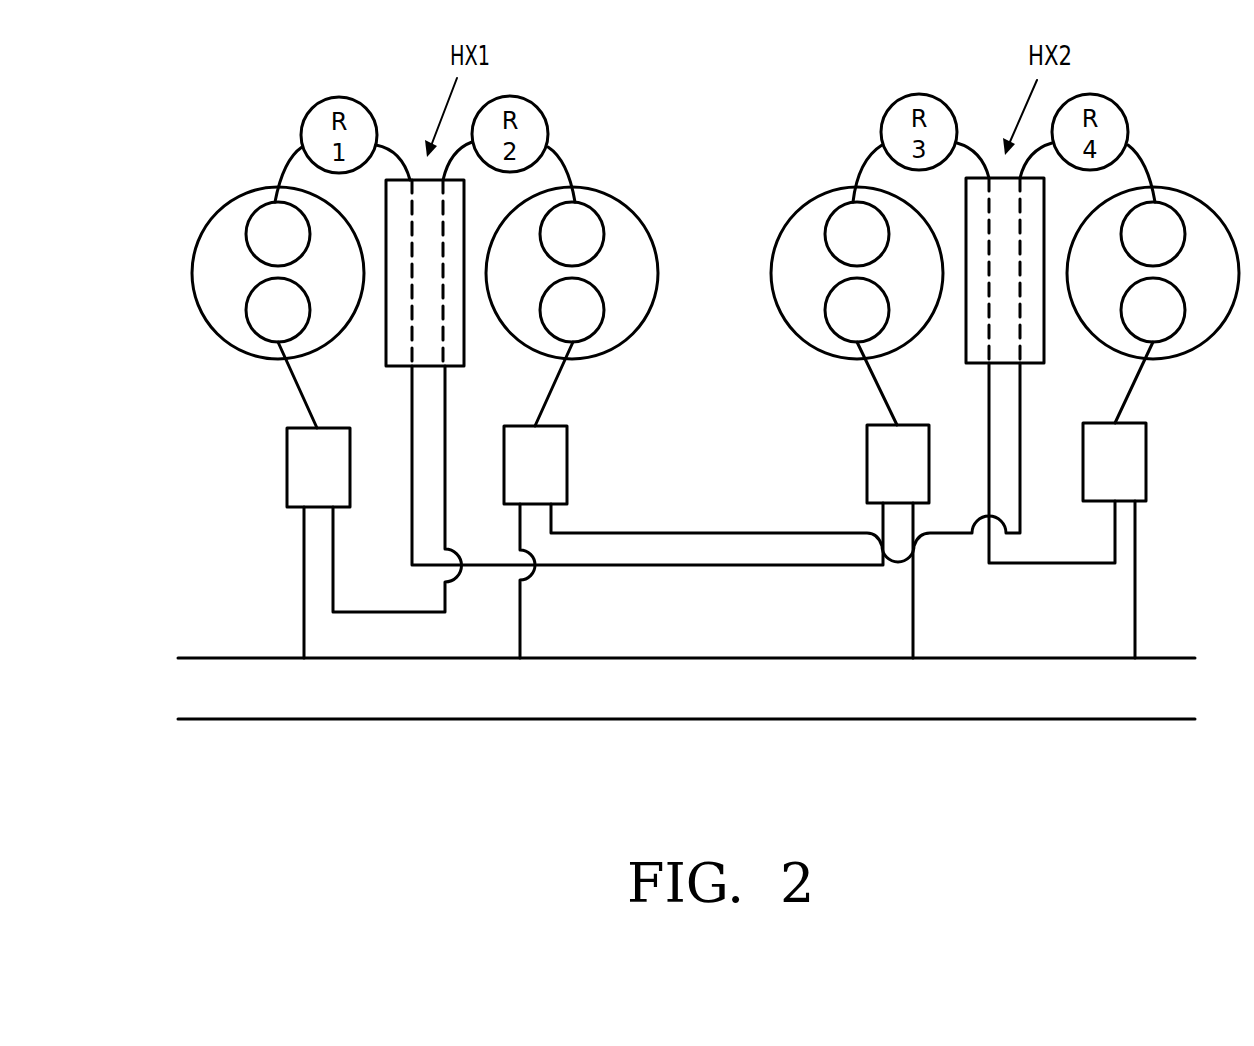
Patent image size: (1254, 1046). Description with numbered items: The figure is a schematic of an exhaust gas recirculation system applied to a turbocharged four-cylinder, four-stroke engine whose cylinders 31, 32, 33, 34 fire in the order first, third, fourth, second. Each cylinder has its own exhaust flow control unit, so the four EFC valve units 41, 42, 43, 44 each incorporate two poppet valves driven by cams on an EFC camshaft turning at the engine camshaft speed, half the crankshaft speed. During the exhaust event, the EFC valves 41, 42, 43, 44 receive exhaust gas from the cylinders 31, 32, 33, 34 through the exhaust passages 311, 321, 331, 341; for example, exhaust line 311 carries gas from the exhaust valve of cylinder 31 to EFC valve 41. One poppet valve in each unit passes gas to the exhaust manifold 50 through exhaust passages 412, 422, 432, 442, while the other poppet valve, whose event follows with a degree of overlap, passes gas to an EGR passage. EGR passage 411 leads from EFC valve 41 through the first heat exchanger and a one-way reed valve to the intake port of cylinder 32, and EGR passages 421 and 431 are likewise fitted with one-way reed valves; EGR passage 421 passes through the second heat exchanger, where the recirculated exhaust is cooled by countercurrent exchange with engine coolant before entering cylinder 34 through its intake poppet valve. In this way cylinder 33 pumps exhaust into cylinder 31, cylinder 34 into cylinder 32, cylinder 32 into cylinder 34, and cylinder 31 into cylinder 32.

The cylinder 31 is at (238, 205).
The cylinder 32 is at (610, 203).
The cylinder 33 is at (818, 202).
The cylinder 34 is at (1192, 202).
The exhaust passage 311 is at (300, 392).
The exhaust passage 321 is at (556, 387).
The exhaust passage 331 is at (874, 378).
The exhaust passage 341 is at (1130, 393).
The EFC valve unit 41 is at (318, 467).
The EFC valve unit 42 is at (535, 465).
The EFC valve unit 43 is at (898, 464).
The EFC valve unit 44 is at (1114, 462).
The EGR passage 411 is at (357, 613).
The exhaust passage 412 is at (303, 548).
The EGR passage 421 is at (800, 533).
The exhaust passage 422 is at (523, 618).
The EGR passage 431 is at (713, 567).
The exhaust passage 432 is at (915, 608).
The exhaust passage 442 is at (990, 448).
The exhaust manifold 50 is at (822, 702).